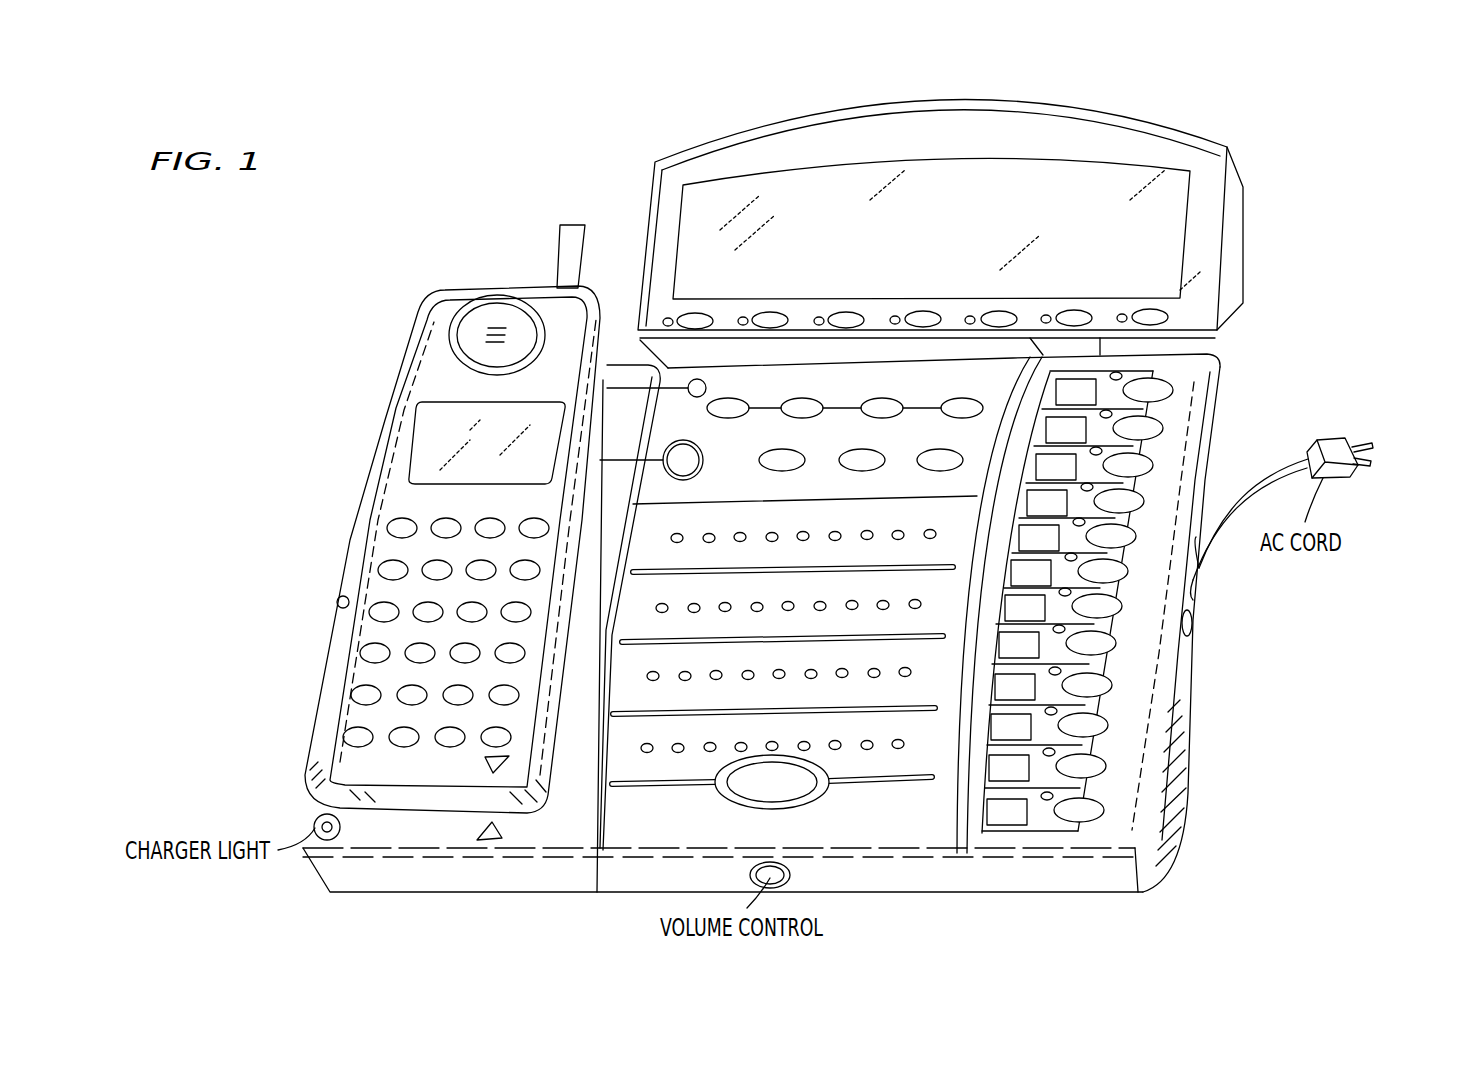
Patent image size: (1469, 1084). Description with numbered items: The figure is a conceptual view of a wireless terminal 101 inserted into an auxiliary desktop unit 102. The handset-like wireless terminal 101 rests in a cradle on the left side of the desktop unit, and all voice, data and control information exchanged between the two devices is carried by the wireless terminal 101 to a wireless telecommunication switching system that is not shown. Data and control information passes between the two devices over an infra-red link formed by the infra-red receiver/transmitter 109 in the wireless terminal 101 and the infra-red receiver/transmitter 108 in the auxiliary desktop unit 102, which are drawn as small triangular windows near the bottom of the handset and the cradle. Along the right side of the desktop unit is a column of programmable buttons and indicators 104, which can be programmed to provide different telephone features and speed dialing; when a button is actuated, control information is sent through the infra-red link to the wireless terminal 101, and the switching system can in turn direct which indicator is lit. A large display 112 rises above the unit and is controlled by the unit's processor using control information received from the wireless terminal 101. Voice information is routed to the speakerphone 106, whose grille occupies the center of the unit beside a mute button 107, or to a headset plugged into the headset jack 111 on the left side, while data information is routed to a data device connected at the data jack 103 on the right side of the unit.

The wireless terminal 101 is at (420, 365).
The auxiliary desktop unit 102 is at (1160, 455).
The data jack 103 is at (1192, 624).
The programmable buttons and indicators 104 is at (1110, 743).
The speakerphone 106 is at (690, 750).
The mute button 107 is at (780, 793).
The infra-red receiver/transmitter 108 is at (478, 832).
The infra-red receiver/transmitter 109 is at (493, 760).
The headset jack 111 is at (340, 600).
The display 112 is at (1160, 211).